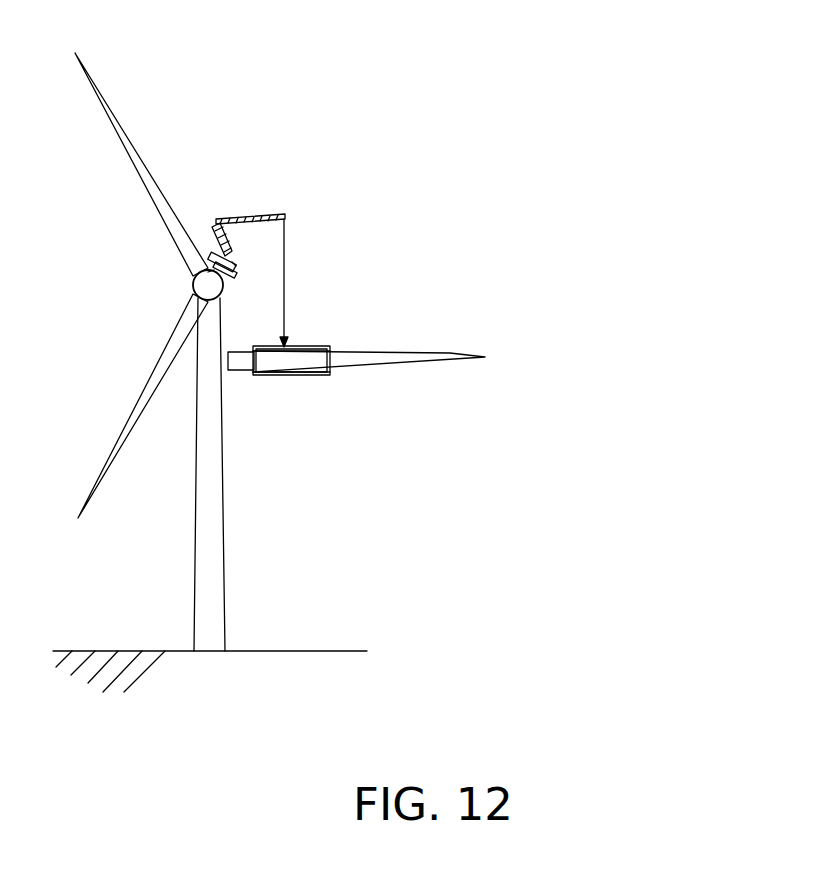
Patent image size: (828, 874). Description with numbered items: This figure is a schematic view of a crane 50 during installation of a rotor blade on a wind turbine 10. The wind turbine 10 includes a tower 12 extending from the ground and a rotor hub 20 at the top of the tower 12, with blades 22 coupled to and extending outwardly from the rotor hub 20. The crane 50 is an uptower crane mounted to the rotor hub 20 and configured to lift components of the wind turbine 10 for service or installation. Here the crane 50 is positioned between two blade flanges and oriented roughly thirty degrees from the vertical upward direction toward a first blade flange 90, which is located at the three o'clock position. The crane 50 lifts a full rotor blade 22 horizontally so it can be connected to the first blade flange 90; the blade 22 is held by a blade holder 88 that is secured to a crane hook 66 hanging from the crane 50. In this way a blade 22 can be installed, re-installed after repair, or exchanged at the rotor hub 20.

The wind turbine 10 is at (361, 145).
The tower 12 is at (224, 517).
The rotor hub 20 is at (193, 289).
The blade 22 is at (113, 137).
The crane 50 is at (203, 214).
The crane hook 66 is at (288, 340).
The blade holder 88 is at (323, 346).
The first blade flange 90 is at (228, 277).